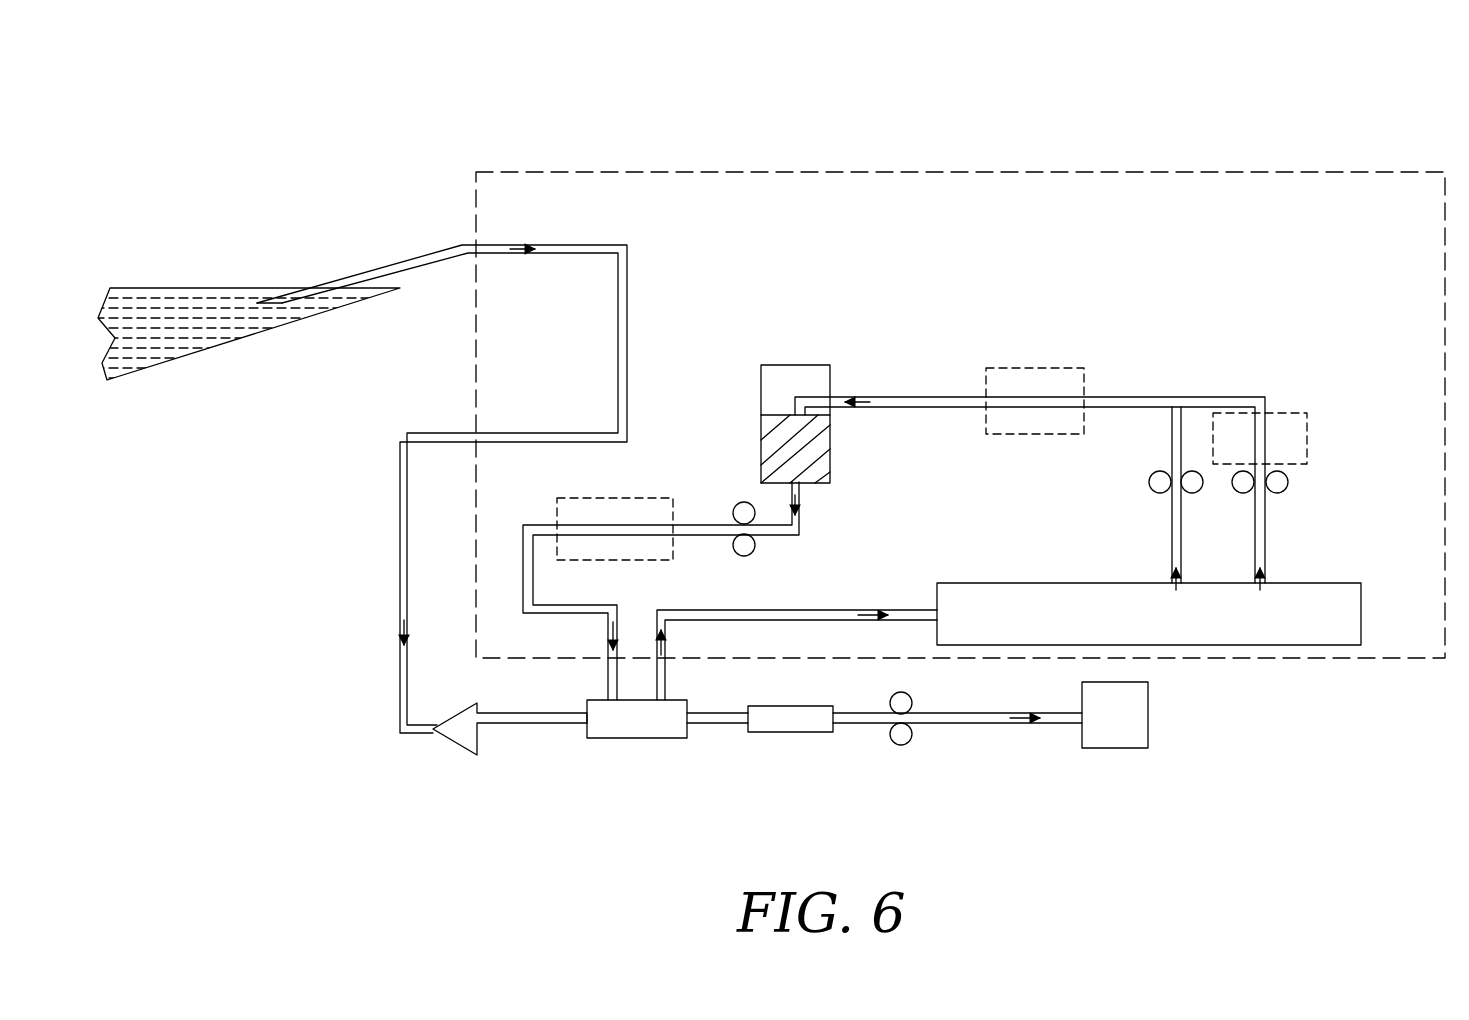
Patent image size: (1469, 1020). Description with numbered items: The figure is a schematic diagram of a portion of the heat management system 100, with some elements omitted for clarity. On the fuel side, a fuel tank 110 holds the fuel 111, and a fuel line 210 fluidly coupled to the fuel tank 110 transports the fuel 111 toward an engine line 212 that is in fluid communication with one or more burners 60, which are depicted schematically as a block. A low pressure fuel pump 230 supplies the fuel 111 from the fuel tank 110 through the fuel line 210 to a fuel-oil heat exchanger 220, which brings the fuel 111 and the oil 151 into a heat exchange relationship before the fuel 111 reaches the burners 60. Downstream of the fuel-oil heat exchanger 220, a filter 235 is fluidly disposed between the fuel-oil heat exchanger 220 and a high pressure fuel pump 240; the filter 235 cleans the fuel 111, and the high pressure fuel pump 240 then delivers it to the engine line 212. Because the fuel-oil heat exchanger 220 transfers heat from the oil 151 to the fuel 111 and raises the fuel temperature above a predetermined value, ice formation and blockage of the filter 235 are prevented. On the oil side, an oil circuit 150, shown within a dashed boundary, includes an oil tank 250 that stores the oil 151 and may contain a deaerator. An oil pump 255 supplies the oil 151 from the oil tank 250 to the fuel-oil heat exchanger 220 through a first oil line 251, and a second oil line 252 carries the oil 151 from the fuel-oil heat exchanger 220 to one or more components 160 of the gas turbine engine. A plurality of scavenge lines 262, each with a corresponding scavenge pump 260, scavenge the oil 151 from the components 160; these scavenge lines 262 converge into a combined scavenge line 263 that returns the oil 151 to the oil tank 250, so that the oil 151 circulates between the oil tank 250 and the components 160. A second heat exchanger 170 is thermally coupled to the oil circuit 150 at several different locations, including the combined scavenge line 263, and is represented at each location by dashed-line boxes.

The heat management system 100 is at (1375, 36).
The fuel tank 110 is at (287, 360).
The fuel 111 is at (165, 346).
The oil circuit 150 is at (832, 172).
The oil 151 is at (818, 452).
The one or more components 160 is at (1149, 614).
The second heat exchanger 170 is at (636, 498).
The fuel line 210 is at (400, 578).
The engine line 212 is at (1000, 723).
The fuel-oil heat exchanger 220 is at (636, 738).
The low pressure fuel pump 230 is at (457, 745).
The filter 235 is at (790, 732).
The high pressure fuel pump 240 is at (901, 745).
The oil tank 250 is at (775, 365).
The first oil line 251 is at (700, 525).
The second oil line 252 is at (884, 610).
The oil pump 255 is at (757, 547).
The scavenge pump 260 is at (1149, 482).
The scavenge line 262 is at (1181, 512).
The combined scavenge line 263 is at (1132, 397).
The burner 60 is at (1115, 715).